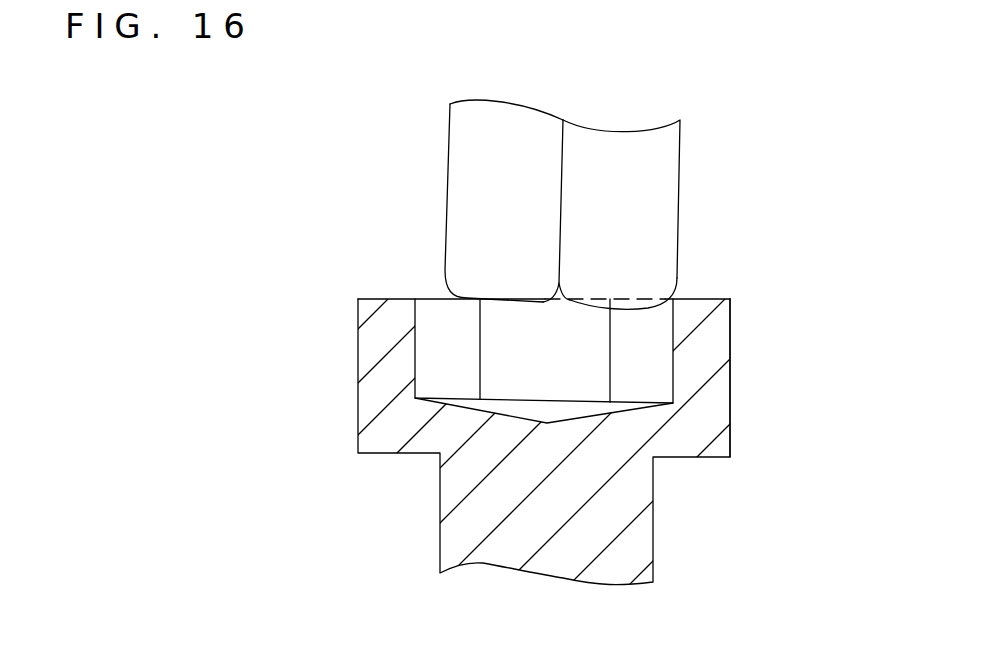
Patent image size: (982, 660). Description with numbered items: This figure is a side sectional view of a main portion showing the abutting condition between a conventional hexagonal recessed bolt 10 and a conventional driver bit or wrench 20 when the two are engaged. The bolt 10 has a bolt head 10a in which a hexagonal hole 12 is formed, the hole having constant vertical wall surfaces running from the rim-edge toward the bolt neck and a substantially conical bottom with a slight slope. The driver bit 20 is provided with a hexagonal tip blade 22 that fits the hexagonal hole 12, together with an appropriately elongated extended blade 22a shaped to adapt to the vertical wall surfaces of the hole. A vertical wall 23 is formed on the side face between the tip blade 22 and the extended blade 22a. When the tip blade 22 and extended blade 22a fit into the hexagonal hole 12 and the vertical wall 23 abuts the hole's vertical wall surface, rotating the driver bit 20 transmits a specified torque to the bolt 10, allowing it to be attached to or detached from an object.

The bolt 10 is at (348, 428).
The bolt head 10a is at (712, 357).
The hexagonal hole 12 is at (445, 333).
The driver bit or wrench 20 is at (632, 108).
The tip blade 22 is at (680, 291).
The extended blade 22a is at (440, 118).
The vertical wall 23 is at (655, 162).